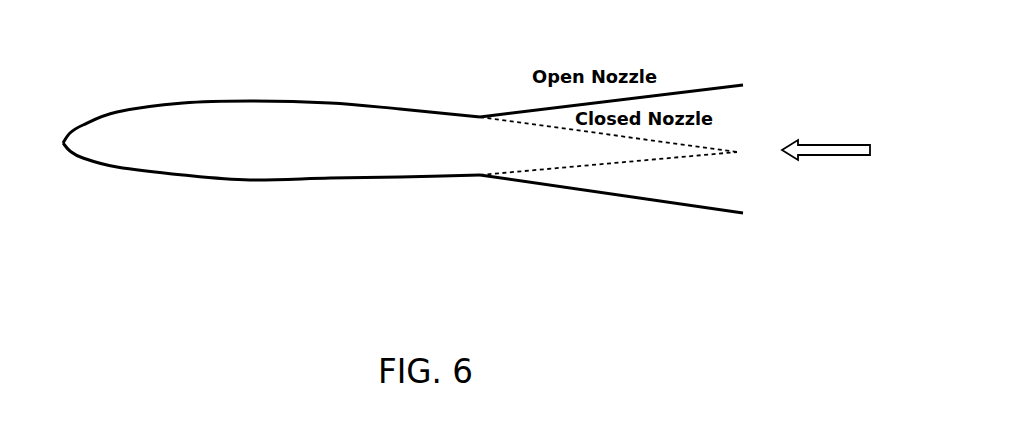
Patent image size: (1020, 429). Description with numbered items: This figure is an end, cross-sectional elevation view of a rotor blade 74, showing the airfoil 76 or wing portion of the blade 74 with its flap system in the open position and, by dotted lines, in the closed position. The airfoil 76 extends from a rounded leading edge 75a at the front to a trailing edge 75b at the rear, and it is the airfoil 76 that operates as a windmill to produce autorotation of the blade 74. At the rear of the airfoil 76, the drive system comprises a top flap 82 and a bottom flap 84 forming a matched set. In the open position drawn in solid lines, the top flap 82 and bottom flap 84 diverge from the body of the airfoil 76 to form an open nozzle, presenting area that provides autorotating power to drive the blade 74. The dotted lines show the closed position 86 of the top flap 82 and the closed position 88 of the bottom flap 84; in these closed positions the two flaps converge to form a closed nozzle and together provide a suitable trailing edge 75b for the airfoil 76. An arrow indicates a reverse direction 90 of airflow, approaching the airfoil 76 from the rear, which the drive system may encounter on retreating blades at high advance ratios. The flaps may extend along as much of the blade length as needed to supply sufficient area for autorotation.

The rotor blade 74 is at (200, 92).
The airfoil 76 is at (93, 133).
The leading edge 75a is at (62, 146).
The top flap 82 is at (708, 85).
The bottom flap 84 is at (712, 215).
The closed position of top flap 86 is at (715, 147).
The closed position of bottom flap 88 is at (680, 157).
The trailing edge 75b is at (737, 152).
The reverse direction 90 is at (842, 147).